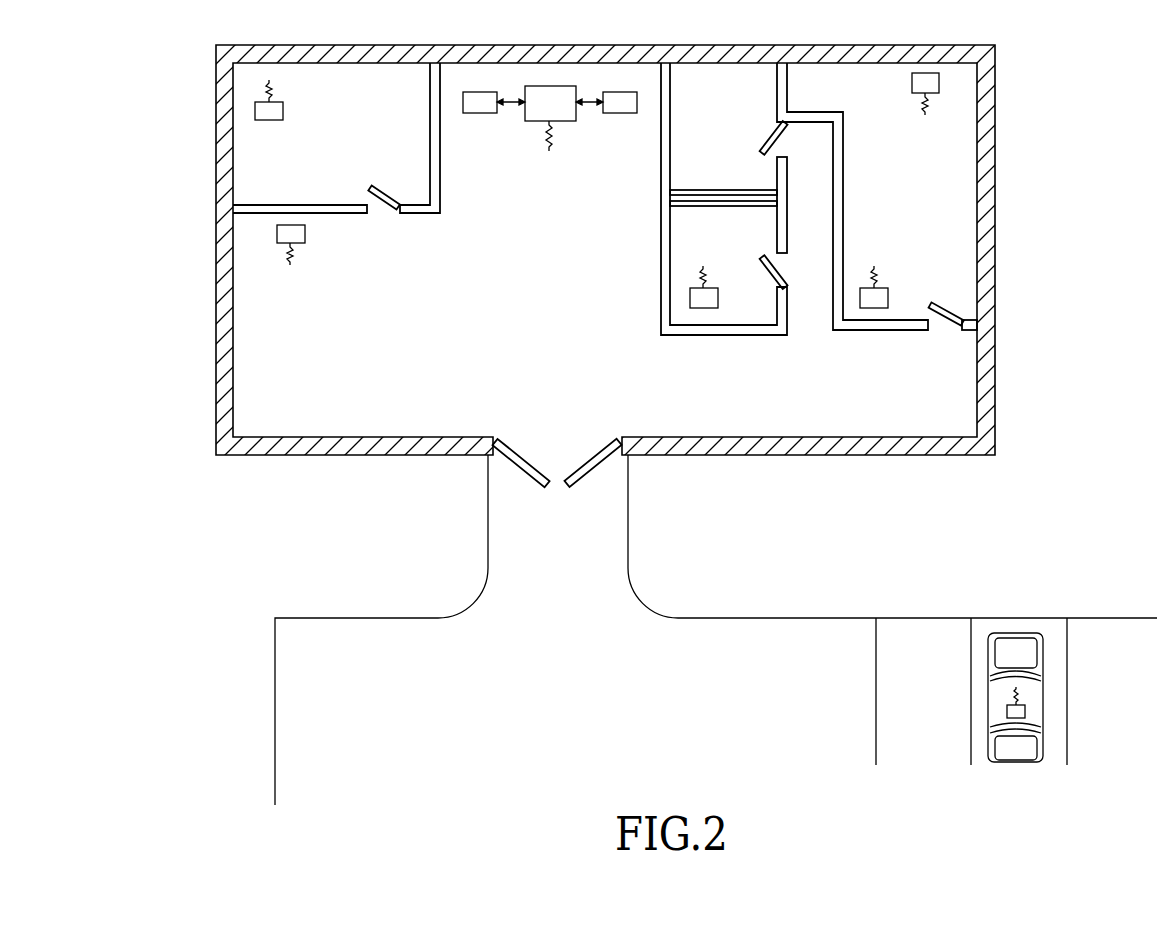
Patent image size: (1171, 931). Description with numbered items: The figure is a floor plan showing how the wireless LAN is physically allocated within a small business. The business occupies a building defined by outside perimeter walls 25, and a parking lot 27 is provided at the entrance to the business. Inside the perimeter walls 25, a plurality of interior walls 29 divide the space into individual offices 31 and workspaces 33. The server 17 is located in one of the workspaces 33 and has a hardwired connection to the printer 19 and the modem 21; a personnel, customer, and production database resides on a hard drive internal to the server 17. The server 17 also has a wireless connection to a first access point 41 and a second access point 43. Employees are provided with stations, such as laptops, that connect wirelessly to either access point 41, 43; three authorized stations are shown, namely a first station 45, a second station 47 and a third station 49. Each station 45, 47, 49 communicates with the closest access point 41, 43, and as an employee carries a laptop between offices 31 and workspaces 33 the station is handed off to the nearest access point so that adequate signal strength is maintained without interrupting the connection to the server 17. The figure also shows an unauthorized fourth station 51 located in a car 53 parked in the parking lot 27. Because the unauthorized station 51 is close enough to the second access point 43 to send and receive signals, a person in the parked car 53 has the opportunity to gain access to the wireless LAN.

The server 17 is at (563, 112).
The printer 19 is at (620, 113).
The modem 21 is at (480, 113).
The outside perimeter walls 25 is at (216, 285).
The parking lot 27 is at (805, 759).
The interior walls 29 is at (440, 184).
The offices 31 is at (374, 116).
The workspaces 33 is at (398, 384).
The first access point 41 is at (305, 235).
The second access point 43 is at (912, 83).
The first station 45 is at (265, 120).
The second station 47 is at (713, 290).
The third station 49 is at (882, 288).
The unauthorized fourth station 51 is at (1007, 712).
The car 53 is at (1035, 660).